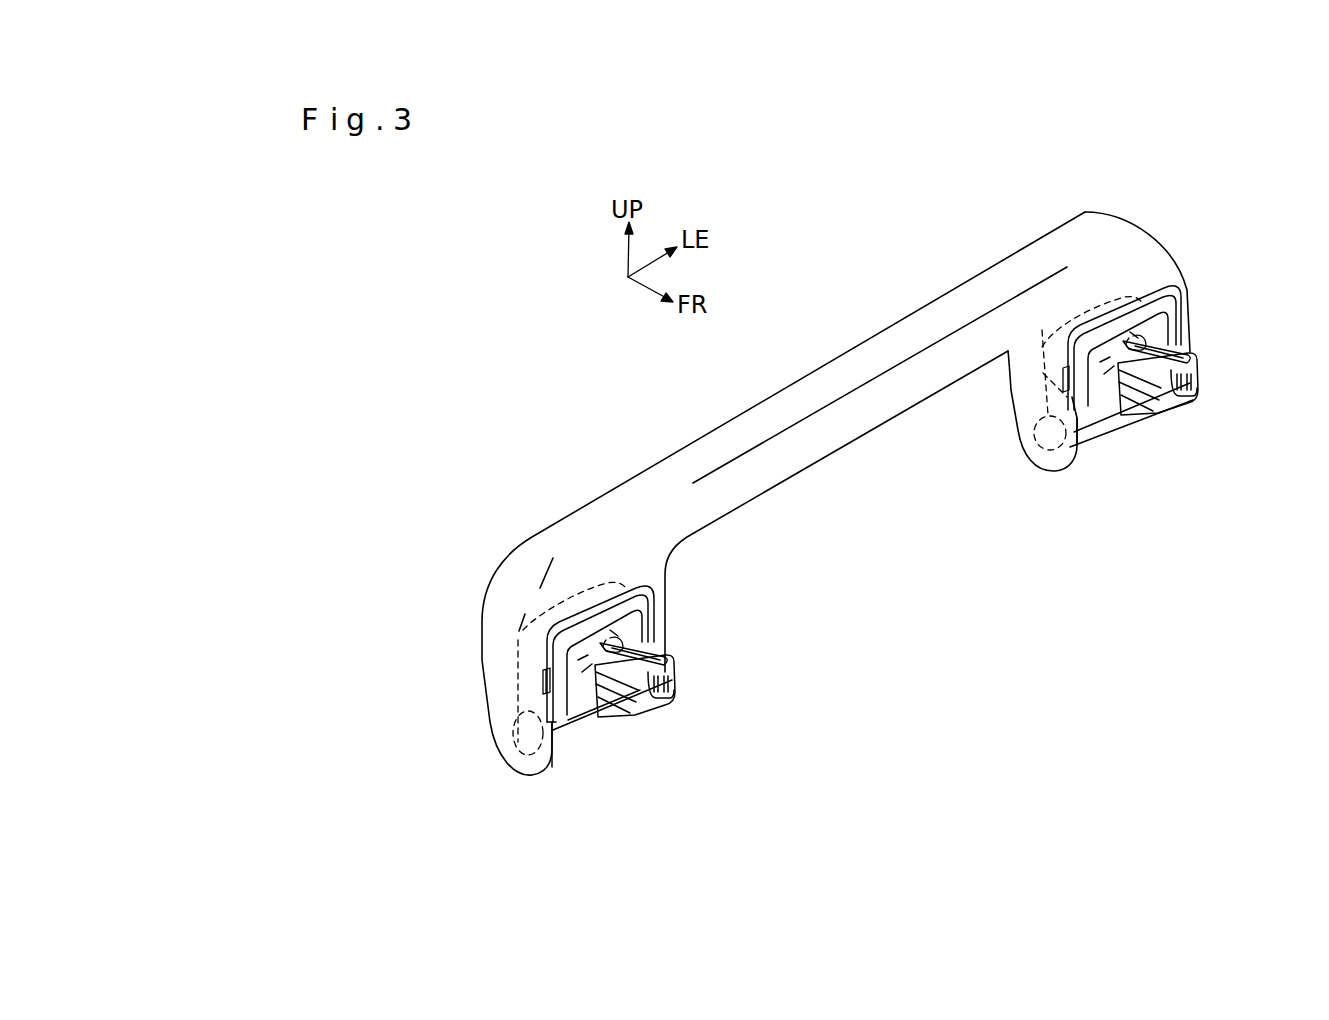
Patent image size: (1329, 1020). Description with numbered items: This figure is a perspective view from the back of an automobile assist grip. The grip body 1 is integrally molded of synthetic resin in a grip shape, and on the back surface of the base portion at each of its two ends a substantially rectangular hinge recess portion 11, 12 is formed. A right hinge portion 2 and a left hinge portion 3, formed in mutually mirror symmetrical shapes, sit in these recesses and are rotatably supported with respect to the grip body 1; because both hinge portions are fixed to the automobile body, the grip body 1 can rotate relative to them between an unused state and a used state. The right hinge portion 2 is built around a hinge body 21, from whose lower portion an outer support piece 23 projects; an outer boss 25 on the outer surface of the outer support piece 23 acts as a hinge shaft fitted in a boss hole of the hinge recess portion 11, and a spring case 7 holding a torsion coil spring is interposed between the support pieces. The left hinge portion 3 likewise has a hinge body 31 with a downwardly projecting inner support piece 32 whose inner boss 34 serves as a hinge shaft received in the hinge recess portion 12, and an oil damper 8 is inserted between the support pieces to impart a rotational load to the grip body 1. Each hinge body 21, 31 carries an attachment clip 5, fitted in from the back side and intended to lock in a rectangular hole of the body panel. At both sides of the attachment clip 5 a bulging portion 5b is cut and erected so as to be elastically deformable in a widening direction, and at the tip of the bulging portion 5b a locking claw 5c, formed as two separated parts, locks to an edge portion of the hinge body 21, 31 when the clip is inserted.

The grip body 1 is at (797, 382).
The right hinge portion 2 is at (681, 629).
The left hinge portion 3 is at (1199, 320).
The attachment clip 5 is at (677, 688).
The bulging portion 5b is at (670, 657).
The locking claw 5c is at (628, 644).
The spring case 7 is at (597, 727).
The oil damper 8 is at (1105, 420).
The hinge recess portion 11 is at (545, 692).
The hinge recess portion 12 is at (1127, 337).
The hinge body 21 is at (653, 605).
The outer support piece 23 is at (553, 737).
The outer boss 25 is at (515, 742).
The hinge body 31 is at (1173, 305).
The inner support piece 32 is at (1087, 427).
The inner boss 34 is at (1020, 450).